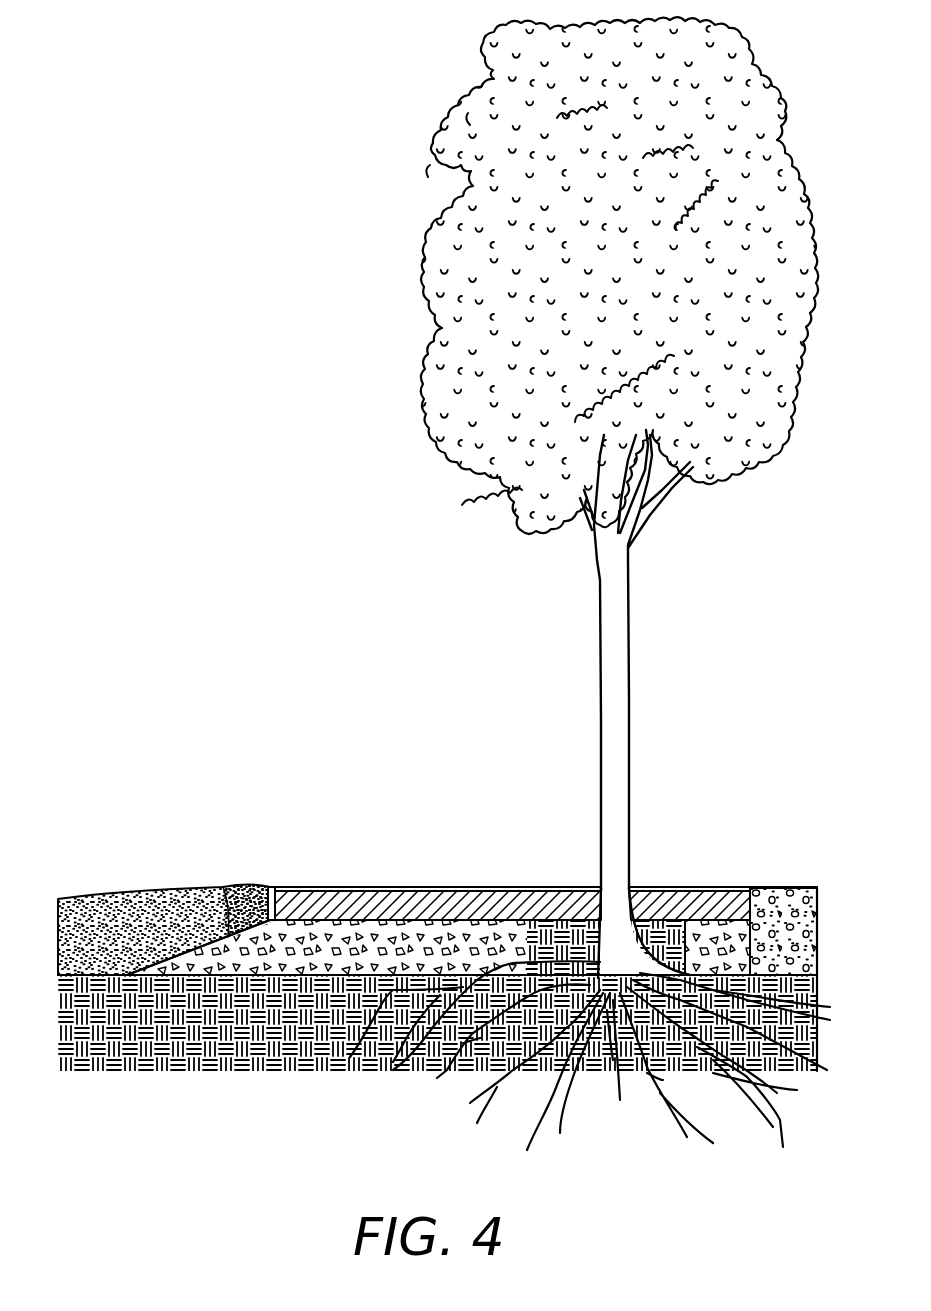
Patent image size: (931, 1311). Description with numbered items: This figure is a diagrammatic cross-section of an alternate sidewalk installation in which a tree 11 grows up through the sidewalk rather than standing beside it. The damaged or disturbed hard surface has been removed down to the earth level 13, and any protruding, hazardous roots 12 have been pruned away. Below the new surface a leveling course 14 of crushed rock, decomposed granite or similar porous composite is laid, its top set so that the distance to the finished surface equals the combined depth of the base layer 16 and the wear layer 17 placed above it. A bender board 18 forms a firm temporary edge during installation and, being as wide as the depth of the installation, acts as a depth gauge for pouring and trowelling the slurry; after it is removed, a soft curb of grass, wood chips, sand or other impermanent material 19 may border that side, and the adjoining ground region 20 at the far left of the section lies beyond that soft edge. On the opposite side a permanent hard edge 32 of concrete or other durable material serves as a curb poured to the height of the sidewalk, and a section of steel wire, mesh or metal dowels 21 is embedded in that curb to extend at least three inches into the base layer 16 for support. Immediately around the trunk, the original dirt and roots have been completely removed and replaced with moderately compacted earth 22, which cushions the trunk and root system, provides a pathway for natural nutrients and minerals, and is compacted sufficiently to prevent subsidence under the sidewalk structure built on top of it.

The tree 11 is at (606, 645).
The roots 12 is at (503, 1070).
The earth level 13 is at (352, 968).
The leveling course 14 is at (230, 1025).
The base layer 16 is at (538, 890).
The wear layer 17 is at (448, 888).
The bender board 18 is at (273, 887).
The impermanent material 19 is at (225, 889).
The topsoil layer 20 is at (130, 897).
The metal dowels 21 is at (717, 920).
The compacted earth 22 is at (655, 955).
The hard edge 32 is at (782, 893).